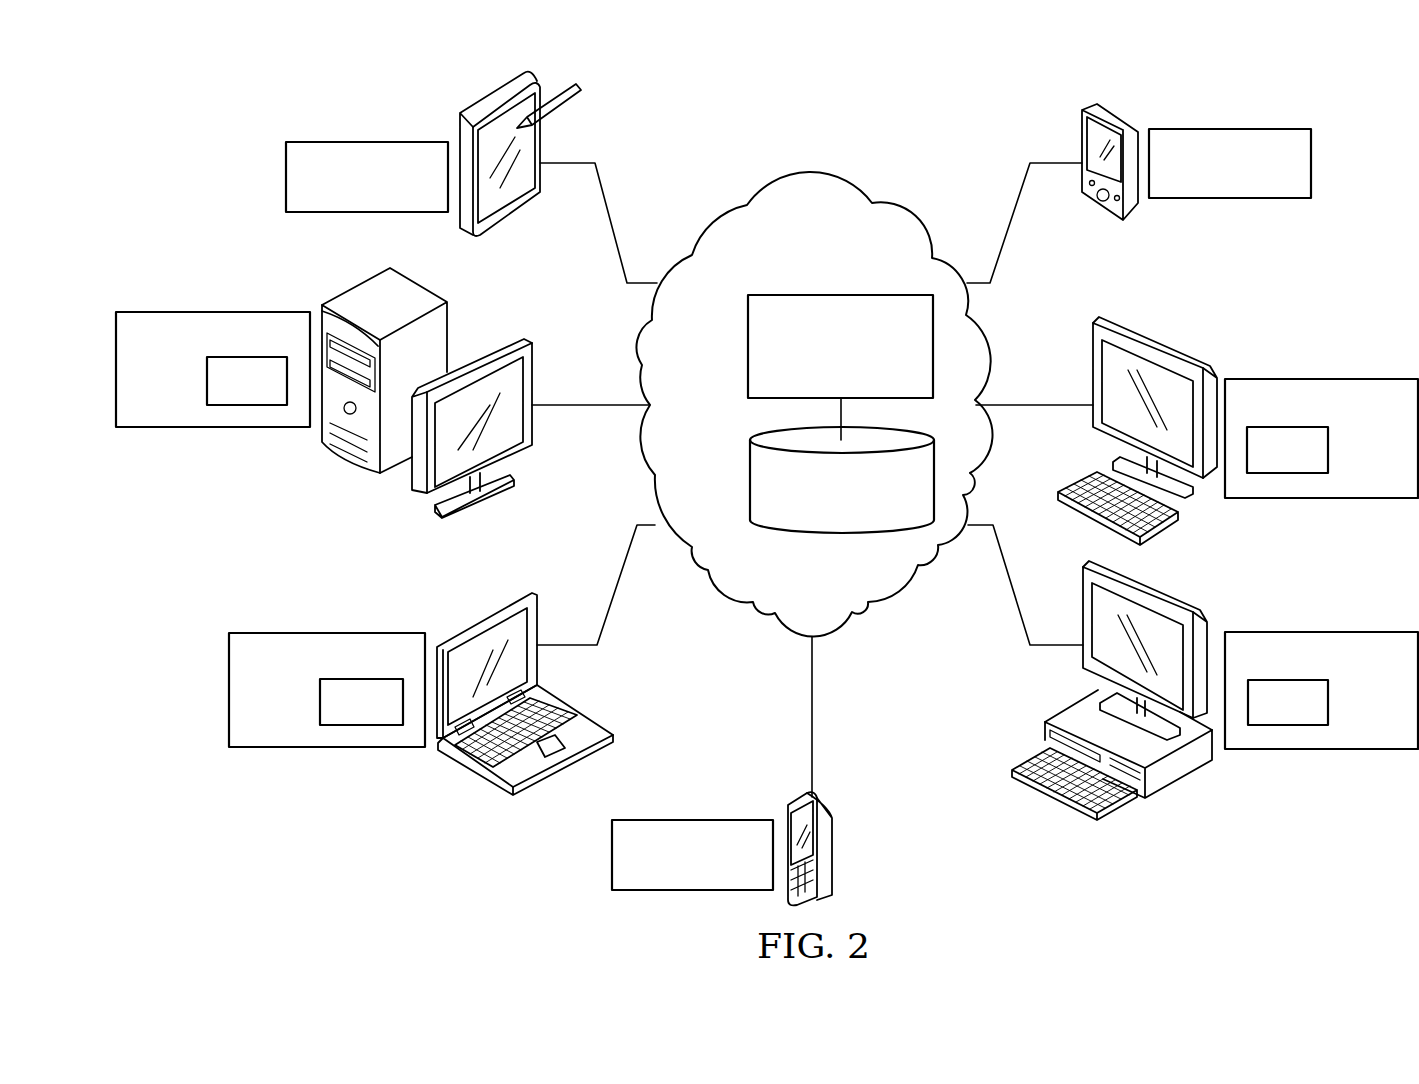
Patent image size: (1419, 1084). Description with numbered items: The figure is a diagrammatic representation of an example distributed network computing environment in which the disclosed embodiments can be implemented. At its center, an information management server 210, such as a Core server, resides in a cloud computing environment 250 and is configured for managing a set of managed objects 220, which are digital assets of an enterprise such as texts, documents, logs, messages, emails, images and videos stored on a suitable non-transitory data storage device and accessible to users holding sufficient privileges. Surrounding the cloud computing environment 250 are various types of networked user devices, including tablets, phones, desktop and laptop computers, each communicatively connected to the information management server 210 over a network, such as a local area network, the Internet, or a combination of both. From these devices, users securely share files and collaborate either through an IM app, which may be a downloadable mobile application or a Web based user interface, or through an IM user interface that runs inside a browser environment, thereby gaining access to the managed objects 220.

The information management server 210 is at (748, 347).
The managed objects 220 is at (750, 485).
The cloud computing environment 250 is at (730, 210).